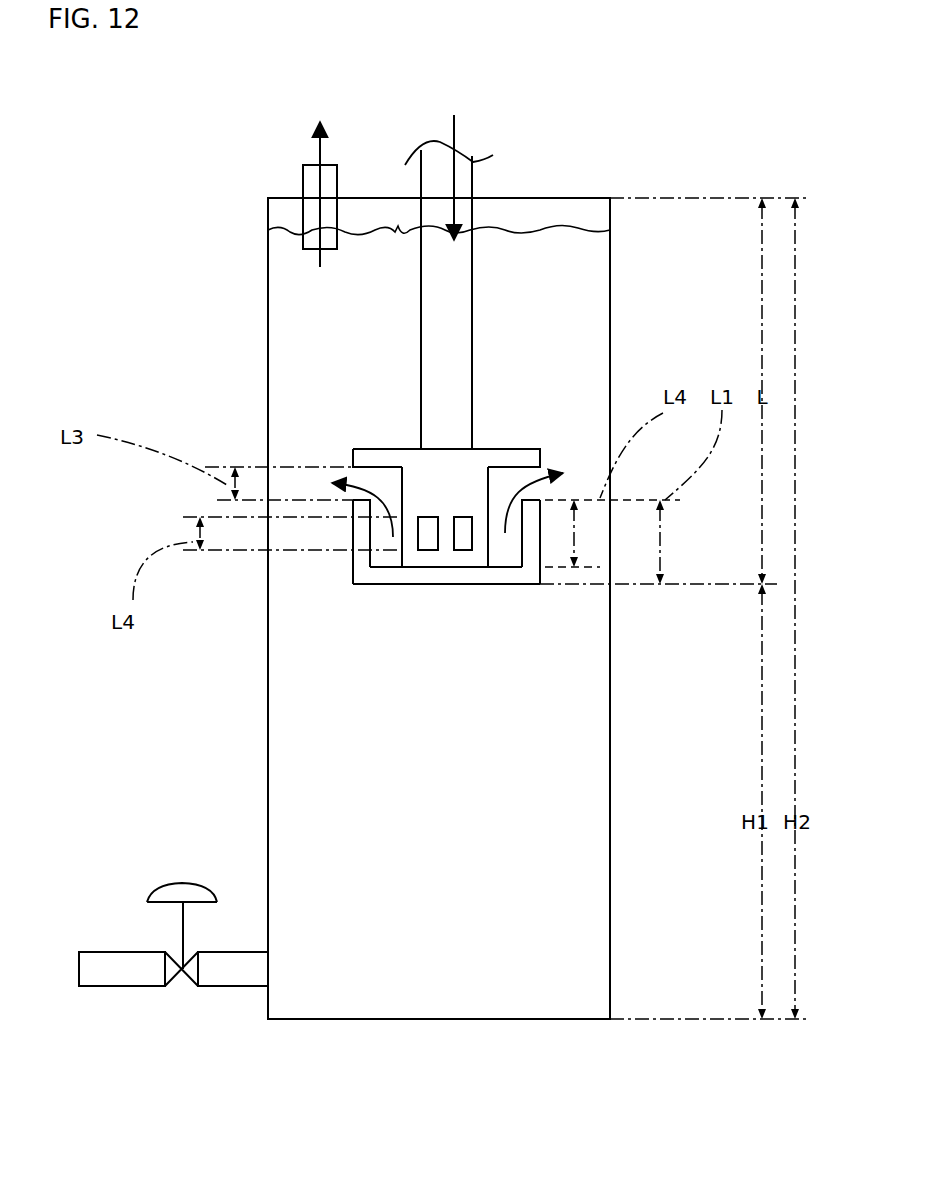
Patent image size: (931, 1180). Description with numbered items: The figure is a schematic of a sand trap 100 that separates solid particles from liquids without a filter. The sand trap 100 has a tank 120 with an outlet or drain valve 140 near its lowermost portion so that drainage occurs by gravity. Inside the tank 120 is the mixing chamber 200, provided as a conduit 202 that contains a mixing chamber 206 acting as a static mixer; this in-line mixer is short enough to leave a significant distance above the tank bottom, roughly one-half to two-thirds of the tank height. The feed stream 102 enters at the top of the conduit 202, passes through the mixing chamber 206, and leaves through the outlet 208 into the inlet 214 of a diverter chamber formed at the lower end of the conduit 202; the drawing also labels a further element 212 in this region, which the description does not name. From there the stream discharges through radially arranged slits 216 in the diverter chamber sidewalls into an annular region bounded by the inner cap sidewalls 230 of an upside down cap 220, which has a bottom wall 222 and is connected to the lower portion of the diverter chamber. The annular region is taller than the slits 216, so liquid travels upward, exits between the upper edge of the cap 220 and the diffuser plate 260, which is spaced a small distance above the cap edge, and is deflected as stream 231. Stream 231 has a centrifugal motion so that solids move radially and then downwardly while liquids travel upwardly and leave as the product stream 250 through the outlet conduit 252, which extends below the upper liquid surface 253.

The sand trap 100 is at (222, 786).
The feed stream 102 is at (455, 137).
The tank 120 is at (610, 280).
The outlet or drain valve 140 is at (112, 952).
The mixing chamber 200 is at (508, 277).
The conduit 202 is at (472, 188).
The mixing chamber 206 is at (437, 350).
The outlet of the mixing chamber 208 is at (437, 467).
The inner tube 212 is at (433, 502).
The inlet 214 is at (437, 490).
The slits 216 is at (475, 533).
The cap 220 is at (472, 587).
The bottom wall 222 is at (433, 587).
The cap sidewalls 230 is at (353, 584).
The stream 231 is at (343, 493).
The product stream 250 is at (317, 147).
The outlet conduit 252 is at (303, 180).
The upper liquid surface 253 is at (283, 230).
The diffuser plate 260 is at (473, 451).